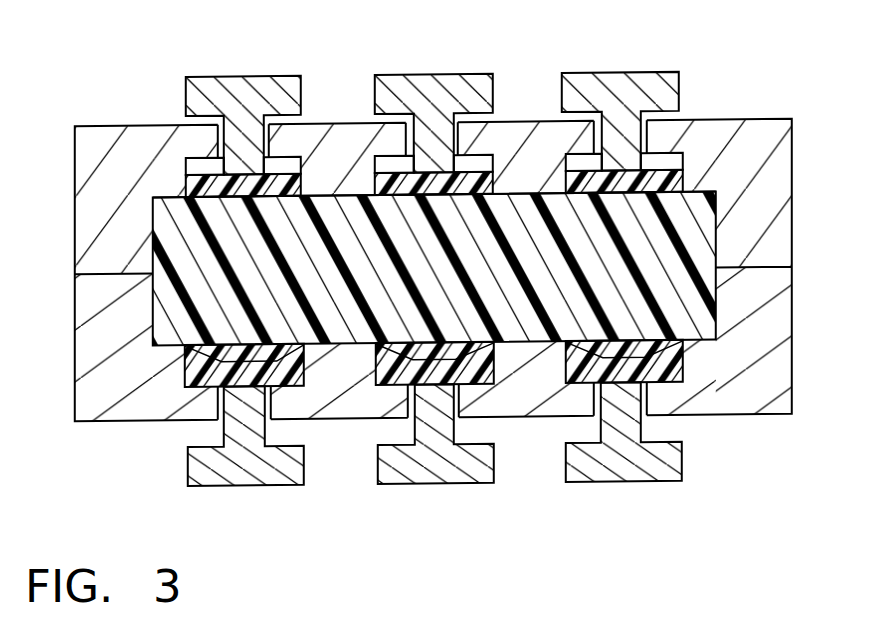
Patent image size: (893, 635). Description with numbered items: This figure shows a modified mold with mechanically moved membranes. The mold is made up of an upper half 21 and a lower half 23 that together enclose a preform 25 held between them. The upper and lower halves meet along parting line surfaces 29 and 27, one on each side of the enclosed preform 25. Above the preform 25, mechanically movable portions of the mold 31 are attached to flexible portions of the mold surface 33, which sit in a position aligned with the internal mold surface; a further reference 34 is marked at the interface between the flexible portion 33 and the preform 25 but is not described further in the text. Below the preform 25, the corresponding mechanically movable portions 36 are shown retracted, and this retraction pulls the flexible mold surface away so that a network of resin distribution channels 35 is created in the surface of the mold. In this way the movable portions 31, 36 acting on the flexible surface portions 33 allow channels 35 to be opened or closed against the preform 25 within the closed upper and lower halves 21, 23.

The upper mold half 21 is at (108, 193).
The lower mold half 23 is at (102, 338).
The preform 25 is at (690, 320).
The parting line surface 27 is at (768, 266).
The parting line surface 29 is at (755, 268).
The mechanically movable portions of the mold 31 is at (260, 78).
The flexible portions of the mold surface 33 is at (207, 182).
The dielectric interface layer 34 is at (331, 198).
The resin distribution channels 35 is at (647, 353).
The mechanically movable portions 36 is at (640, 470).